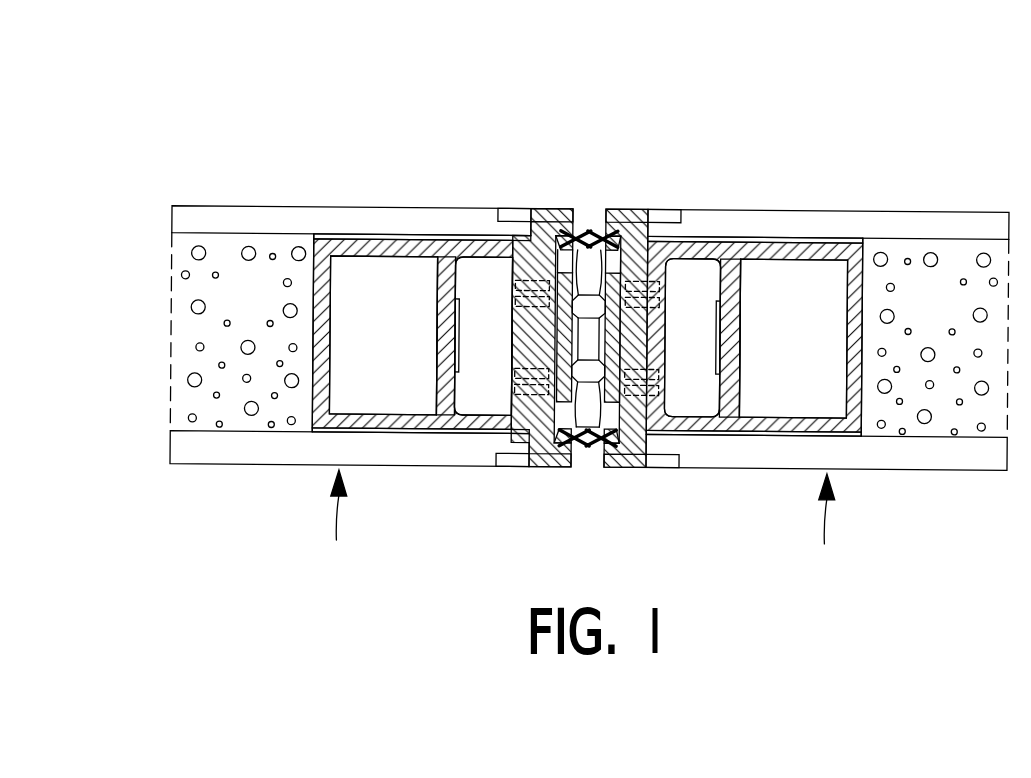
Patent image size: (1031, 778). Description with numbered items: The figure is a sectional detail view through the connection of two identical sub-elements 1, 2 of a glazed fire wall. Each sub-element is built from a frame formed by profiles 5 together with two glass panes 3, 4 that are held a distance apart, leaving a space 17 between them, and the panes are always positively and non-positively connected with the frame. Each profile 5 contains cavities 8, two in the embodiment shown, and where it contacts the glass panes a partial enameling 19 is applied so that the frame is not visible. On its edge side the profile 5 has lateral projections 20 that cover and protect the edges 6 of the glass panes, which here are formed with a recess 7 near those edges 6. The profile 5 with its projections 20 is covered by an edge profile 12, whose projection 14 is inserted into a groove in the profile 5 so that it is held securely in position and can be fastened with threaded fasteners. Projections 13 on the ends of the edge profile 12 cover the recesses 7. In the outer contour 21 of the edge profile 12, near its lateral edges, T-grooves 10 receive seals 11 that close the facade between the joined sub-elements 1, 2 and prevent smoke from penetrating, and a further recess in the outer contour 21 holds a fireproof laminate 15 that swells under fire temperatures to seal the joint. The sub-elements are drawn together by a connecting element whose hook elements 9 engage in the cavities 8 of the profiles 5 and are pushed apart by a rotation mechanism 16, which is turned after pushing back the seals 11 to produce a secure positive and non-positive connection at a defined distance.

The sub-element 1 is at (335, 518).
The sub-element 2 is at (825, 522).
The glass pane 3 is at (220, 215).
The glass pane 4 is at (218, 440).
The profile 5 is at (330, 433).
The edge of glass pane 6 is at (518, 209).
The recess 7 is at (503, 209).
The cavity 8 is at (453, 243).
The hook element 9 is at (505, 433).
The T-groove 10 is at (600, 444).
The seal 11 is at (560, 246).
The edge profile 12 is at (584, 450).
The projection 13 is at (550, 228).
The projection 14 is at (508, 330).
The fireproof laminate 15 is at (589, 293).
The rotation mechanism 16 is at (650, 345).
The space 17 is at (258, 306).
The partial enameling 19 is at (408, 237).
The projection 20 is at (482, 264).
The outer contour 21 is at (576, 232).